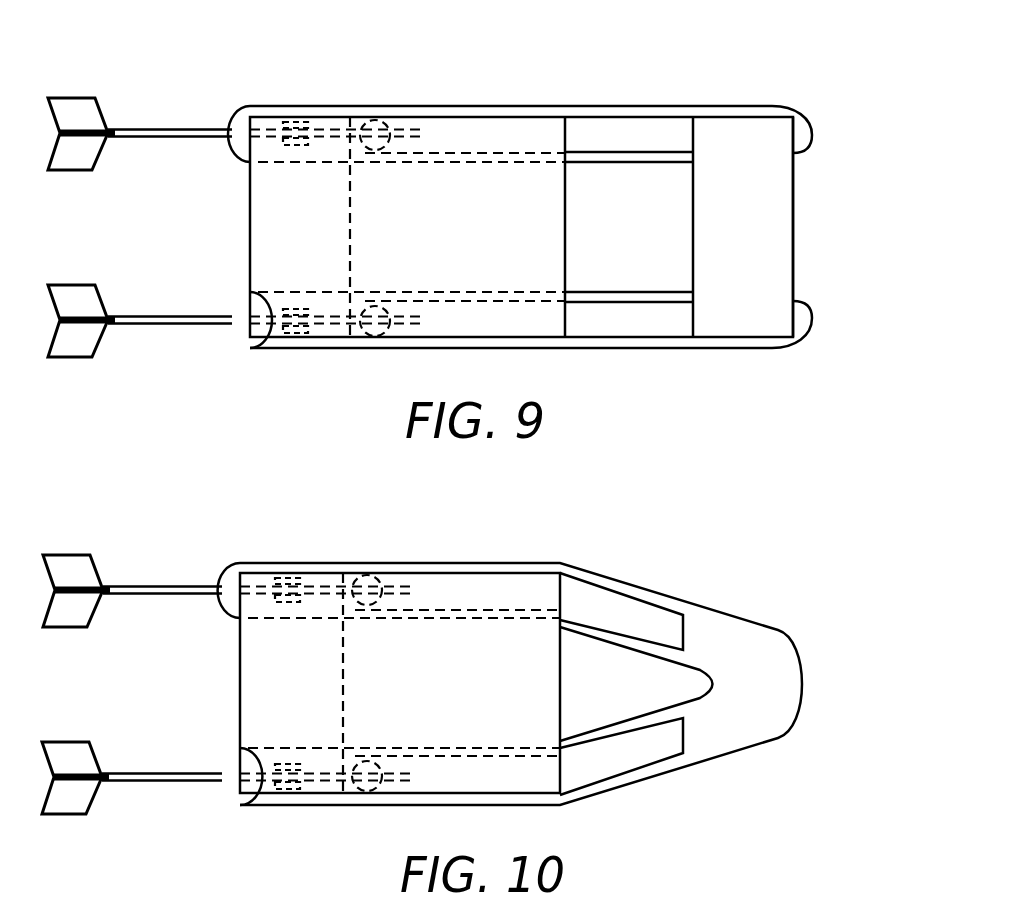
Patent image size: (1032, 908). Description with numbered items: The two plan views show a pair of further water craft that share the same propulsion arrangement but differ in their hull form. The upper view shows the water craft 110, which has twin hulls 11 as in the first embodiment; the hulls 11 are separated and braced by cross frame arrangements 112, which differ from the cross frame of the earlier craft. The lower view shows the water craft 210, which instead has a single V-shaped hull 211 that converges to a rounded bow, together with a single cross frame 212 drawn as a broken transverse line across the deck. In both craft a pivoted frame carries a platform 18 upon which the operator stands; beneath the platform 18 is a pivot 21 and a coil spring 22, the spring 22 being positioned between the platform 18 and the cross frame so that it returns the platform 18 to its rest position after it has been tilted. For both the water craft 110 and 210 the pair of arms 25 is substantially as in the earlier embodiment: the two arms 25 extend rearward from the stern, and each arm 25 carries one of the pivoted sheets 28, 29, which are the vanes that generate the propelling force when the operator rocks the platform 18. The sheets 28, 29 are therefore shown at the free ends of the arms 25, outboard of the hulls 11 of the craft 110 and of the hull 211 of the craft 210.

In FIG. 9, the twin hulls 11 is at (643, 350).
In FIG. 9, the platform 18 is at (568, 228).
In FIG. 10, the platform 18 is at (558, 690).
In FIG. 9, the pivot 21 is at (297, 337).
In FIG. 10, the pivot 21 is at (288, 762).
In FIG. 9, the coil spring 22 is at (392, 128).
In FIG. 10, the coil spring 22 is at (386, 584).
In FIG. 9, the arms 25 is at (165, 313).
In FIG. 10, the arms 25 is at (148, 597).
In FIG. 9, the pivoted sheet 28 is at (80, 110).
In FIG. 10, the pivoted sheet 28 is at (73, 568).
In FIG. 9, the pivoted sheet 29 is at (78, 345).
In FIG. 10, the pivoted sheet 29 is at (70, 802).
In FIG. 9, the water craft 110 is at (723, 80).
In FIG. 9, the cross frame arrangements 112 is at (355, 227).
In FIG. 10, the water craft 210 is at (753, 596).
In FIG. 10, the V-shaped hull 211 is at (657, 773).
In FIG. 10, the cross frame 212 is at (343, 687).